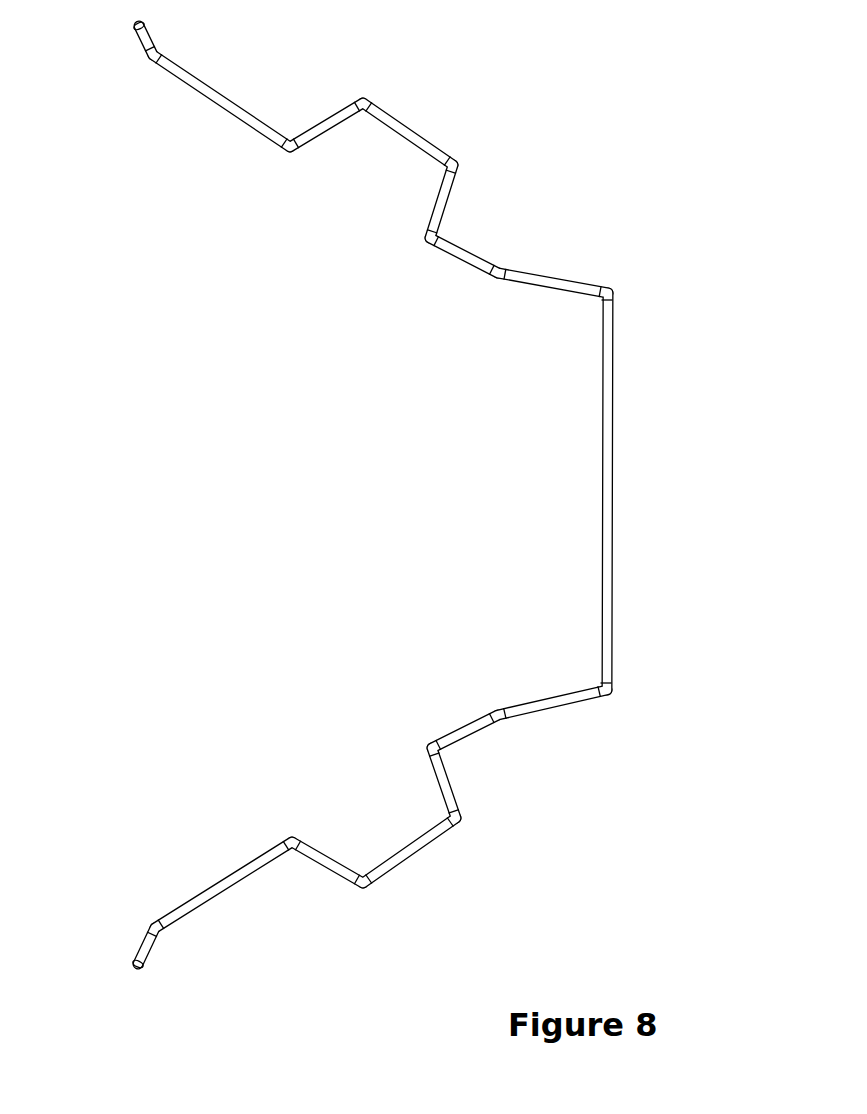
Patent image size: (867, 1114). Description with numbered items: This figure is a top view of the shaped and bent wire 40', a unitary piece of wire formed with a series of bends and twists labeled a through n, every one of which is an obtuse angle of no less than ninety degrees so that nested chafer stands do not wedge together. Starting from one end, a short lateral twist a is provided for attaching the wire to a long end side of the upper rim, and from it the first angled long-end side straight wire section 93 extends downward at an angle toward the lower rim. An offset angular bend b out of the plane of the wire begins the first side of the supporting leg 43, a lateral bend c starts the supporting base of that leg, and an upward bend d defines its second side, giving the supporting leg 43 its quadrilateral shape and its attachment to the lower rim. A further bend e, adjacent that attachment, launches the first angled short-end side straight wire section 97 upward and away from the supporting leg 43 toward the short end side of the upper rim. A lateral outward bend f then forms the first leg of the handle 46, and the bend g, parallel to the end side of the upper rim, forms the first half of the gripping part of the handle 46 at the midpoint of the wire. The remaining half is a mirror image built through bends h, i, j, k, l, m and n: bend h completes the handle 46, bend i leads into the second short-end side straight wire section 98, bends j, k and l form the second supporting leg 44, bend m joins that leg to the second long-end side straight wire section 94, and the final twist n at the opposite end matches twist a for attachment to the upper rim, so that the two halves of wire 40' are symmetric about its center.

The shaped and bent wire 40' is at (385, 495).
The second long-end side straight wire section 94 is at (232, 112).
The second supporting leg 44 is at (432, 139).
The second short-end side straight wire section 98 is at (461, 261).
The handle 46 is at (613, 560).
The first angled short-end side straight wire section 97 is at (462, 725).
The supporting leg 43 is at (408, 857).
The first angled long-end side straight wire section 93 is at (197, 898).
The short lateral twist a is at (146, 939).
The offset angular bend b is at (289, 837).
The lateral bend c is at (364, 888).
The upward bend d is at (463, 826).
The bend e is at (427, 751).
The lateral outward bend f is at (502, 718).
The bend g is at (604, 696).
The bend h is at (613, 295).
The bend i is at (500, 272).
The bend j is at (427, 239).
The bend k is at (460, 165).
The bend l is at (364, 103).
The bend m is at (292, 153).
The twist n is at (149, 54).